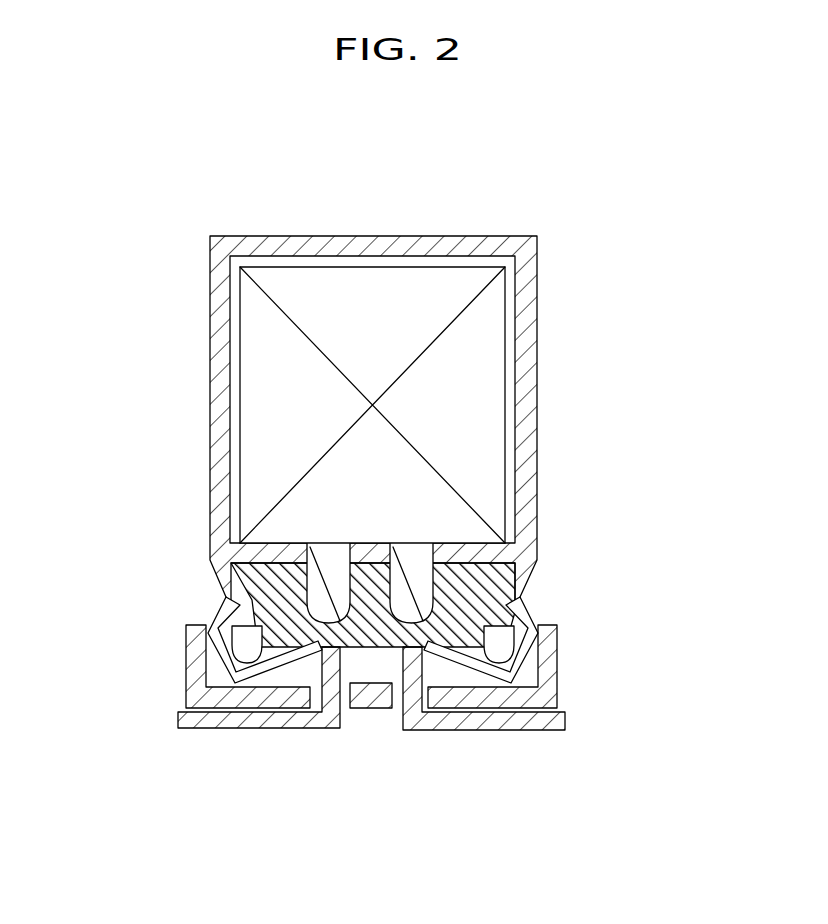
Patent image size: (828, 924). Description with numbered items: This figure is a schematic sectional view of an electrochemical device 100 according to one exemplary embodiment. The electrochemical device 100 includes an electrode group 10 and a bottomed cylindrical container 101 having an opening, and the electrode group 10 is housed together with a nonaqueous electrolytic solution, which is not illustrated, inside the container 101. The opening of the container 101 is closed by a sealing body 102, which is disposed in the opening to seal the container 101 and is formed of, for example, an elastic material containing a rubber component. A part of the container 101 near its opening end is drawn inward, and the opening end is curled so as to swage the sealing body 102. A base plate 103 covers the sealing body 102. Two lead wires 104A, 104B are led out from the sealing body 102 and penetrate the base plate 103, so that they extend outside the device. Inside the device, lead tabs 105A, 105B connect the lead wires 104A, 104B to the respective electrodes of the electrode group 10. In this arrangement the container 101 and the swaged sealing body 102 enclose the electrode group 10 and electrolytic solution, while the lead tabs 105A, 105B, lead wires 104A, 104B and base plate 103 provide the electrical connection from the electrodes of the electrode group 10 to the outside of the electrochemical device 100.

The electrochemical device 100 is at (400, 224).
The container 101 is at (527, 438).
The electrode group 10 is at (273, 422).
The sealing body 102 is at (468, 602).
The base plate 103 is at (187, 678).
The lead wire 104A is at (248, 730).
The lead wire 104B is at (490, 722).
The lead tab 105A is at (330, 600).
The lead tab 105B is at (410, 568).